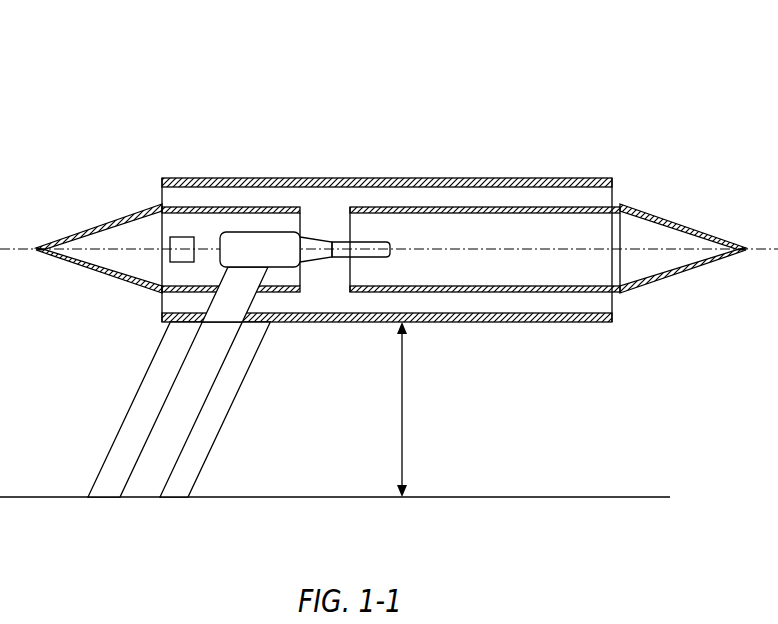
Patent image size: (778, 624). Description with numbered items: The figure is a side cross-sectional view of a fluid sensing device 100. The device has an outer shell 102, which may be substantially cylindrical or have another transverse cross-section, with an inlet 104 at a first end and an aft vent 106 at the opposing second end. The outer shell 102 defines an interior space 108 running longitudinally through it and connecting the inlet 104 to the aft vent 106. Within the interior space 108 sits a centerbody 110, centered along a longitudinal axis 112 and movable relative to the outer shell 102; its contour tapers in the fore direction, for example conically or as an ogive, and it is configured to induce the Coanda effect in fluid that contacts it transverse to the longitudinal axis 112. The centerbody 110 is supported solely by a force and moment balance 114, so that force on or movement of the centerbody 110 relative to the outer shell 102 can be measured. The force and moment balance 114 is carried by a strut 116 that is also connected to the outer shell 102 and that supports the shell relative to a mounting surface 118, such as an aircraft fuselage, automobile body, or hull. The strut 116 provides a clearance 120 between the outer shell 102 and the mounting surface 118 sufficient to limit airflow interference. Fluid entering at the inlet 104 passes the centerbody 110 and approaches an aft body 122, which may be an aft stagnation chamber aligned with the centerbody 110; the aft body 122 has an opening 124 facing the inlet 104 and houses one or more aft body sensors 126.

The fluid sensing device 100 is at (622, 68).
The outer shell 102 is at (590, 182).
The inlet 104 is at (632, 300).
The aft vent 106 is at (152, 198).
The interior space 108 is at (440, 197).
The centerbody 110 is at (670, 218).
The longitudinal axis 112 is at (88, 245).
The force and moment balance 114 is at (327, 258).
The strut 116 is at (202, 362).
The mounting surface 118 is at (565, 497).
The clearance 120 is at (400, 437).
The aft body 122 is at (238, 232).
The opening 124 is at (309, 205).
The aft body sensors 126 is at (182, 237).